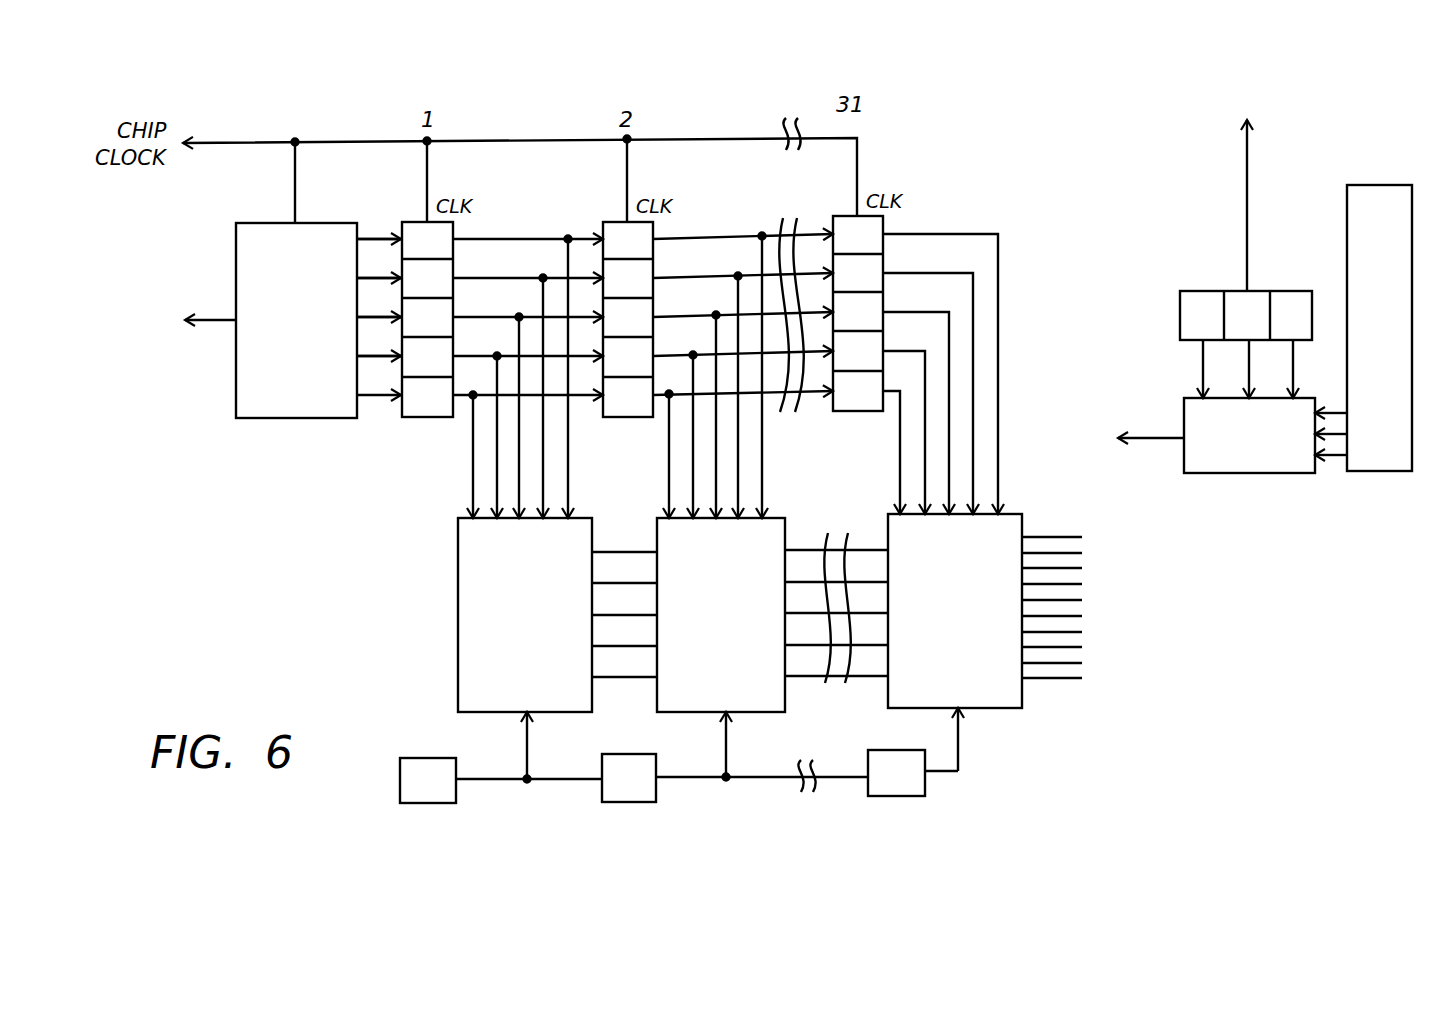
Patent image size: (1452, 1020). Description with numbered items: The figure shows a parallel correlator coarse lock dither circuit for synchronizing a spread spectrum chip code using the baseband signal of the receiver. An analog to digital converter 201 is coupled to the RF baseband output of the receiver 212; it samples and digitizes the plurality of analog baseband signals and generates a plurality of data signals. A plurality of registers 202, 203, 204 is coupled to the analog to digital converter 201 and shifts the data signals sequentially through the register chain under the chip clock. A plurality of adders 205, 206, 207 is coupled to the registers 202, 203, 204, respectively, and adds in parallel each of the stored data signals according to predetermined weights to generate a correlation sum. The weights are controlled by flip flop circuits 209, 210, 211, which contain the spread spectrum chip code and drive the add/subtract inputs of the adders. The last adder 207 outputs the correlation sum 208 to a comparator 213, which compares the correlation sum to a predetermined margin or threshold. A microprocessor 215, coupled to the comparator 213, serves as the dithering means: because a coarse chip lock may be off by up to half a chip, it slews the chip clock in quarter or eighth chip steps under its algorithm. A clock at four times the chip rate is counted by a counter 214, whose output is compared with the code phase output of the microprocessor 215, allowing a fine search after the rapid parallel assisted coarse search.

The analog to digital converter 201 is at (330, 418).
The register 202 is at (446, 417).
The register 203 is at (643, 417).
The register 204 is at (872, 411).
The adder 205 is at (560, 712).
The adder 206 is at (750, 712).
The adder 207 is at (990, 708).
The correlation sum 208 is at (1082, 632).
The flip flop circuit 209 is at (433, 803).
The flip flop circuit 210 is at (632, 802).
The flip flop circuit 211 is at (898, 796).
The RF baseband output of the receiver 212 is at (207, 319).
The comparator 213 is at (1252, 473).
The counter 214 is at (1208, 290).
The microprocessor 215 is at (1395, 184).